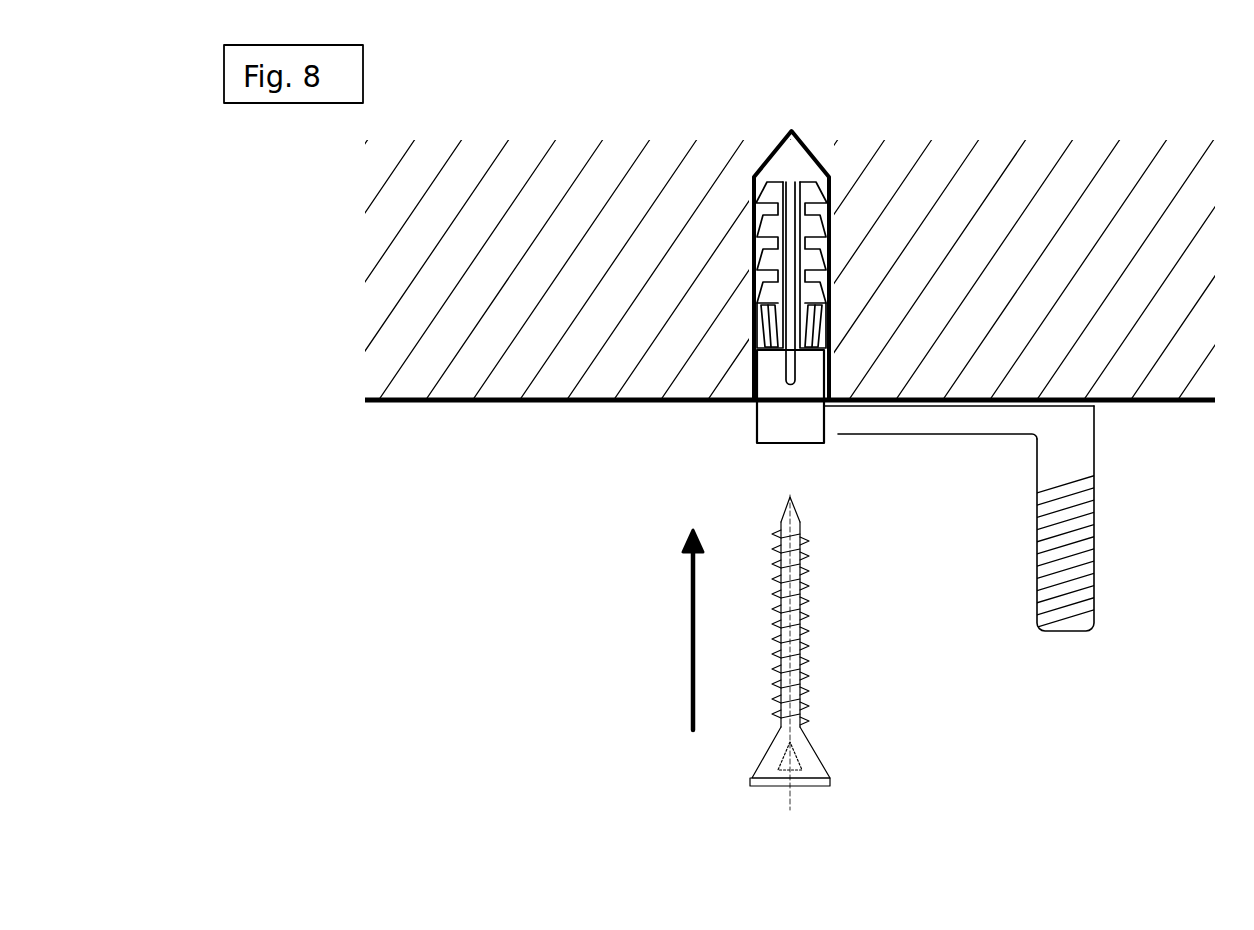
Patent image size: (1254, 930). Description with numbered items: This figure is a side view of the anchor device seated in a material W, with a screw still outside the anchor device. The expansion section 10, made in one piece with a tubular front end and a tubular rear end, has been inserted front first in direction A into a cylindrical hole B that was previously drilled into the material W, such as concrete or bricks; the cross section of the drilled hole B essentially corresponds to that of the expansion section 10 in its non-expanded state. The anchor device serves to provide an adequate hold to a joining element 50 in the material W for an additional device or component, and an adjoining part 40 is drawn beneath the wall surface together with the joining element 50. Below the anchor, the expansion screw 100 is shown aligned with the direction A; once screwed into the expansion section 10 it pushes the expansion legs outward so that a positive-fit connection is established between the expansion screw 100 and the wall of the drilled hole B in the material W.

The expansion section 10 is at (987, 335).
The hole B is at (783, 168).
The material W is at (458, 379).
The mounting plate 40 is at (988, 428).
The joining element 50 is at (1085, 553).
The expansion screw 100 is at (812, 764).
The direction A is at (684, 630).